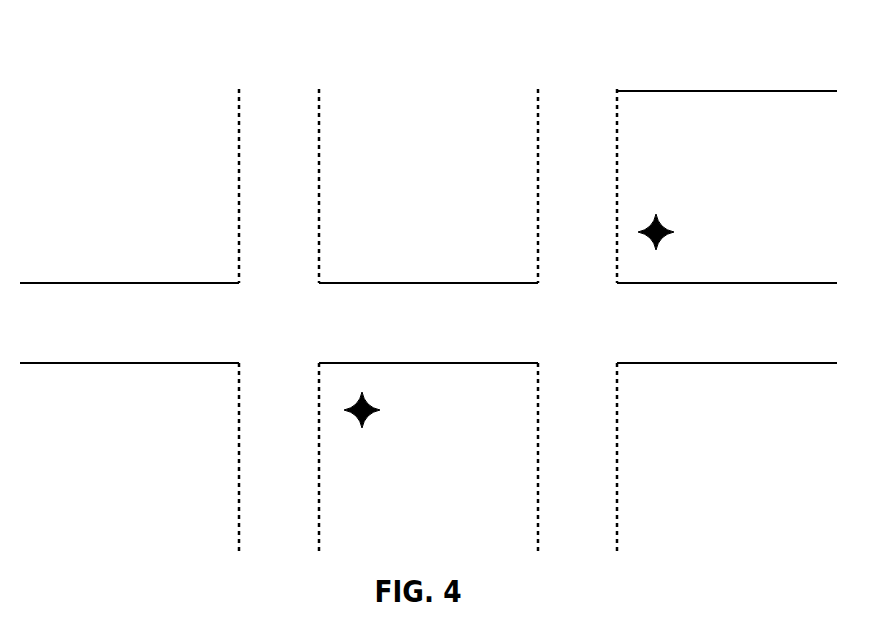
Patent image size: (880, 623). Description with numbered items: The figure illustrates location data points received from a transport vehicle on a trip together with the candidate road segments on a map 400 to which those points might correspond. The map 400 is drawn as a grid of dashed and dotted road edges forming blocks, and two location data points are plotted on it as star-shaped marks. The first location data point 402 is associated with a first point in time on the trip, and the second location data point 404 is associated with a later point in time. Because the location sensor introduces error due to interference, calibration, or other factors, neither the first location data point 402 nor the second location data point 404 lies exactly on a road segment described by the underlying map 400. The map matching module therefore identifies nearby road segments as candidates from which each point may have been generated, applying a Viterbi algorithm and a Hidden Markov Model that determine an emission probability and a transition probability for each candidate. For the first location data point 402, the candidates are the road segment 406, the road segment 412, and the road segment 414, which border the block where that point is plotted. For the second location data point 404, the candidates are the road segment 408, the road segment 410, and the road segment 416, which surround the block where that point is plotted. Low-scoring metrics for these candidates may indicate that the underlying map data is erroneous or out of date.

The map 400 is at (146, 36).
The first location data point 402 is at (380, 411).
The second location data point 404 is at (679, 228).
The road segment 406 is at (451, 335).
The road segment 408 is at (556, 178).
The road segment 410 is at (701, 326).
The road segment 412 is at (558, 471).
The road segment 414 is at (260, 470).
The road segment 416 is at (699, 69).